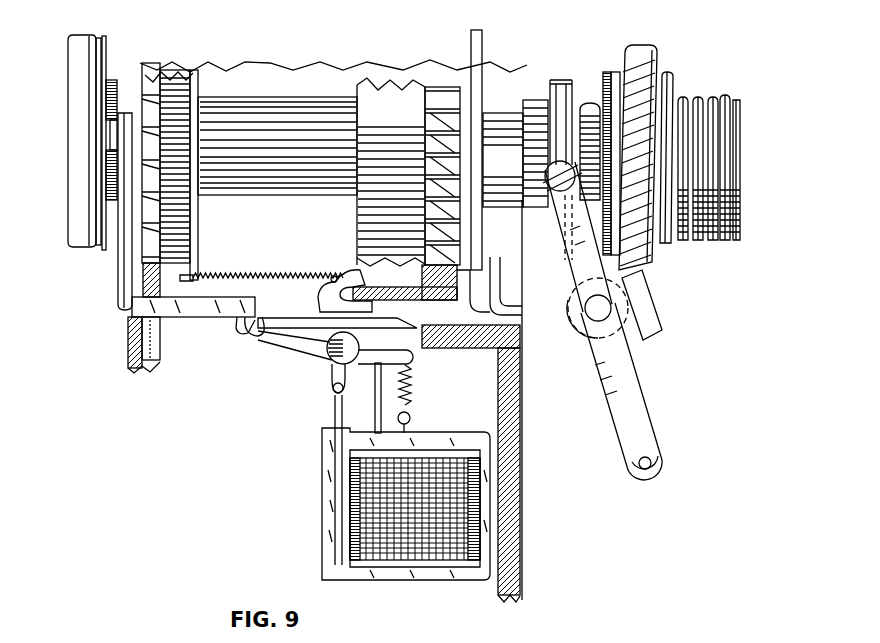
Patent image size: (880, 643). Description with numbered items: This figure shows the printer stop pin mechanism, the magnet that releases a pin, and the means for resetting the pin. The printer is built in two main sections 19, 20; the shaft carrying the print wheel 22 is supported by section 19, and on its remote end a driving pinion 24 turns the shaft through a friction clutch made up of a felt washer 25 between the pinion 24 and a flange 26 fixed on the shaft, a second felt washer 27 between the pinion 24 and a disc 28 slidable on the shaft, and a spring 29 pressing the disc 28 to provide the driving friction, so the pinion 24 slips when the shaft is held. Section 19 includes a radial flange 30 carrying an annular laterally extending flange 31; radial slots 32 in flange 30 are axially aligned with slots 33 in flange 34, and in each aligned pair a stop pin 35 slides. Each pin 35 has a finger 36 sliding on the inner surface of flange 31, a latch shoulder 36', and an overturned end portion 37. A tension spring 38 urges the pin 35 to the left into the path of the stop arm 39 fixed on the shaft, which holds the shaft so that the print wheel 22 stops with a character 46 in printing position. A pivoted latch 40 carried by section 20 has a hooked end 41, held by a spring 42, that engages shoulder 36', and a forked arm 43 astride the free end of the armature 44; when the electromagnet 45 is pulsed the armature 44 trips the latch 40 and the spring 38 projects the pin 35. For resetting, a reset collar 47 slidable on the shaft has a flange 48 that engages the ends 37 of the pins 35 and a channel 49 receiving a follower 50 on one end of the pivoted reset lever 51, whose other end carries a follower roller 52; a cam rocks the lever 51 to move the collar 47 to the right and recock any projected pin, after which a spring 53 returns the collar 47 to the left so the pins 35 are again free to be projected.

The printer section 19 is at (292, 63).
The printer section 20 is at (515, 507).
The print wheel 22 is at (105, 58).
The driving pinion 24 is at (652, 44).
The felt washer 25 is at (616, 74).
The flange 26 is at (606, 74).
The felt washer 27 is at (668, 70).
The disc 28 is at (680, 84).
The spring 29 is at (703, 227).
The radial flange 30 is at (478, 312).
The annular laterally extending flange 31 is at (353, 207).
The radial slot 32 is at (427, 170).
The slot 33 is at (187, 173).
The flange 34 is at (188, 243).
The stop pin 35 is at (202, 317).
The finger 36 is at (337, 274).
The latch shoulder 36' is at (264, 352).
The overturned end portion 37 is at (505, 260).
The spring 38 is at (243, 274).
The stop arm 39 is at (118, 280).
The pivoted latch 40 is at (307, 350).
The hooked end 41 is at (237, 333).
The spring 42 is at (410, 392).
The forked arm 43 is at (327, 393).
The armature 44 is at (322, 473).
The electromagnet 45 is at (350, 483).
The character 46 is at (100, 43).
The reset collar 47 is at (515, 153).
The flange 48 is at (482, 66).
The channel 49 is at (553, 95).
The follower 50 is at (543, 185).
The reset lever 51 is at (568, 283).
The follower roller 52 is at (668, 458).
The spring 53 is at (588, 108).